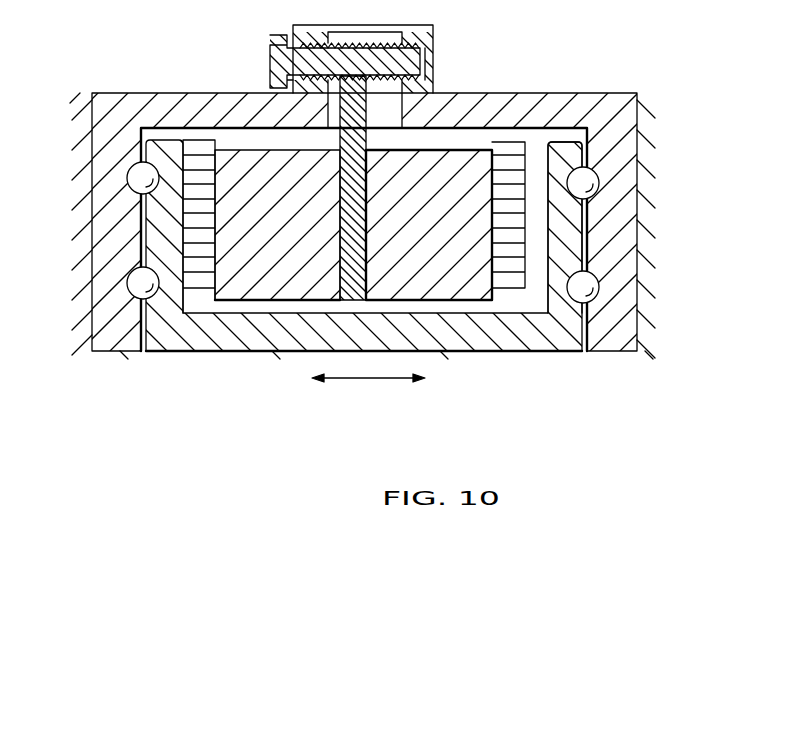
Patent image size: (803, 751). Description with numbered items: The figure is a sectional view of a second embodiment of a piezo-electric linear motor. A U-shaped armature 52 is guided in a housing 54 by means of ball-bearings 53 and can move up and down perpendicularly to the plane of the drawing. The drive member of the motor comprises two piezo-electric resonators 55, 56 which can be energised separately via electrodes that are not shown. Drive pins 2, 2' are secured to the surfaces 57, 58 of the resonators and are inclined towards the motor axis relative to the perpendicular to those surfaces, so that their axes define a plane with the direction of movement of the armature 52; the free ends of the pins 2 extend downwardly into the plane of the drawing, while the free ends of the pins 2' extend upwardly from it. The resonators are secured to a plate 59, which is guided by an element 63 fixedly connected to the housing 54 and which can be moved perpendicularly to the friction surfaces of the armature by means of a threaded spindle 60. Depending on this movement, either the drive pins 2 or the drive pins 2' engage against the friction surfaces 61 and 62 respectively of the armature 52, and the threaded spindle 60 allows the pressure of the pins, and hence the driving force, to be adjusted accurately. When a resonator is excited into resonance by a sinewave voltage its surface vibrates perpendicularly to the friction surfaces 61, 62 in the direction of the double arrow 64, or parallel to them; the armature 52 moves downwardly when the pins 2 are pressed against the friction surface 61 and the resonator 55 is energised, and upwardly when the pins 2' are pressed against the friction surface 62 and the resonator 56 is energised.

The drive pins 2 is at (169, 164).
The drive pins 2' is at (623, 235).
The U-shaped armature 52 is at (278, 352).
The ball-bearings 53 is at (142, 283).
The housing 54 is at (105, 206).
The piezo-electric resonator 55 is at (248, 160).
The piezo-electric resonator 56 is at (457, 160).
The surface of resonator 57 is at (212, 138).
The surface of resonator 58 is at (495, 150).
The plate 59 is at (348, 140).
The threaded spindle 60 is at (373, 37).
The friction surface 61 is at (142, 141).
The friction surface 62 is at (553, 165).
The element 63 is at (425, 28).
The double arrow 64 is at (362, 381).